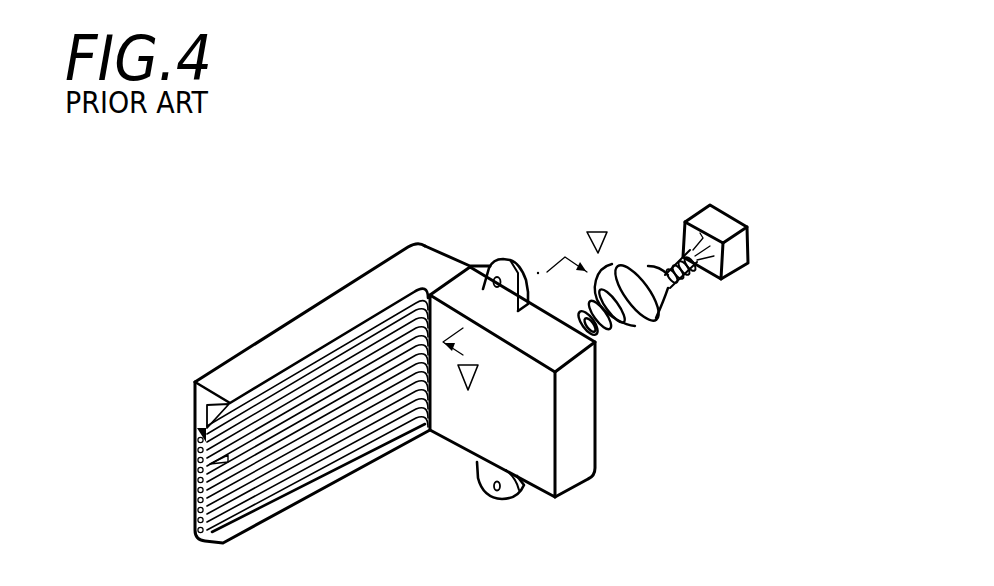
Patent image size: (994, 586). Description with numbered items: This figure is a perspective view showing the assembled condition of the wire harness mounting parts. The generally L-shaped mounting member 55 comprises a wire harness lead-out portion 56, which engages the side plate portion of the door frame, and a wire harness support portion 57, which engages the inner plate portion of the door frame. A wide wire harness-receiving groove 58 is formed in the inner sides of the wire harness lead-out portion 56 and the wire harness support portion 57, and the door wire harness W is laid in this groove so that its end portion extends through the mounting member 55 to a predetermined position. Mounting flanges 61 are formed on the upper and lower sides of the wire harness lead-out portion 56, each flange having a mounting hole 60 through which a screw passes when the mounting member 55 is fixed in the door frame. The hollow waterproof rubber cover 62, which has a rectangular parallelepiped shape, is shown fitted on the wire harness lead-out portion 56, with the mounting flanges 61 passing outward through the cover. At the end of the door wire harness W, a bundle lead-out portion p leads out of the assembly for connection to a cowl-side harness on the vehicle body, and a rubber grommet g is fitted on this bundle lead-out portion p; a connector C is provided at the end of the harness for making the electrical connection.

The mounting member 55 is at (347, 268).
The wire harness lead-out portion 56 is at (435, 265).
The wire harness support portion 57 is at (233, 353).
The wire harness-receiving groove 58 is at (196, 411).
The door wire harness W is at (197, 457).
The mounting hole 60 is at (520, 263).
The mounting flange 61 is at (490, 263).
The waterproof rubber cover 62 is at (583, 408).
The grommet g is at (650, 330).
The bundle lead-out portion p is at (693, 273).
The connector C is at (726, 224).